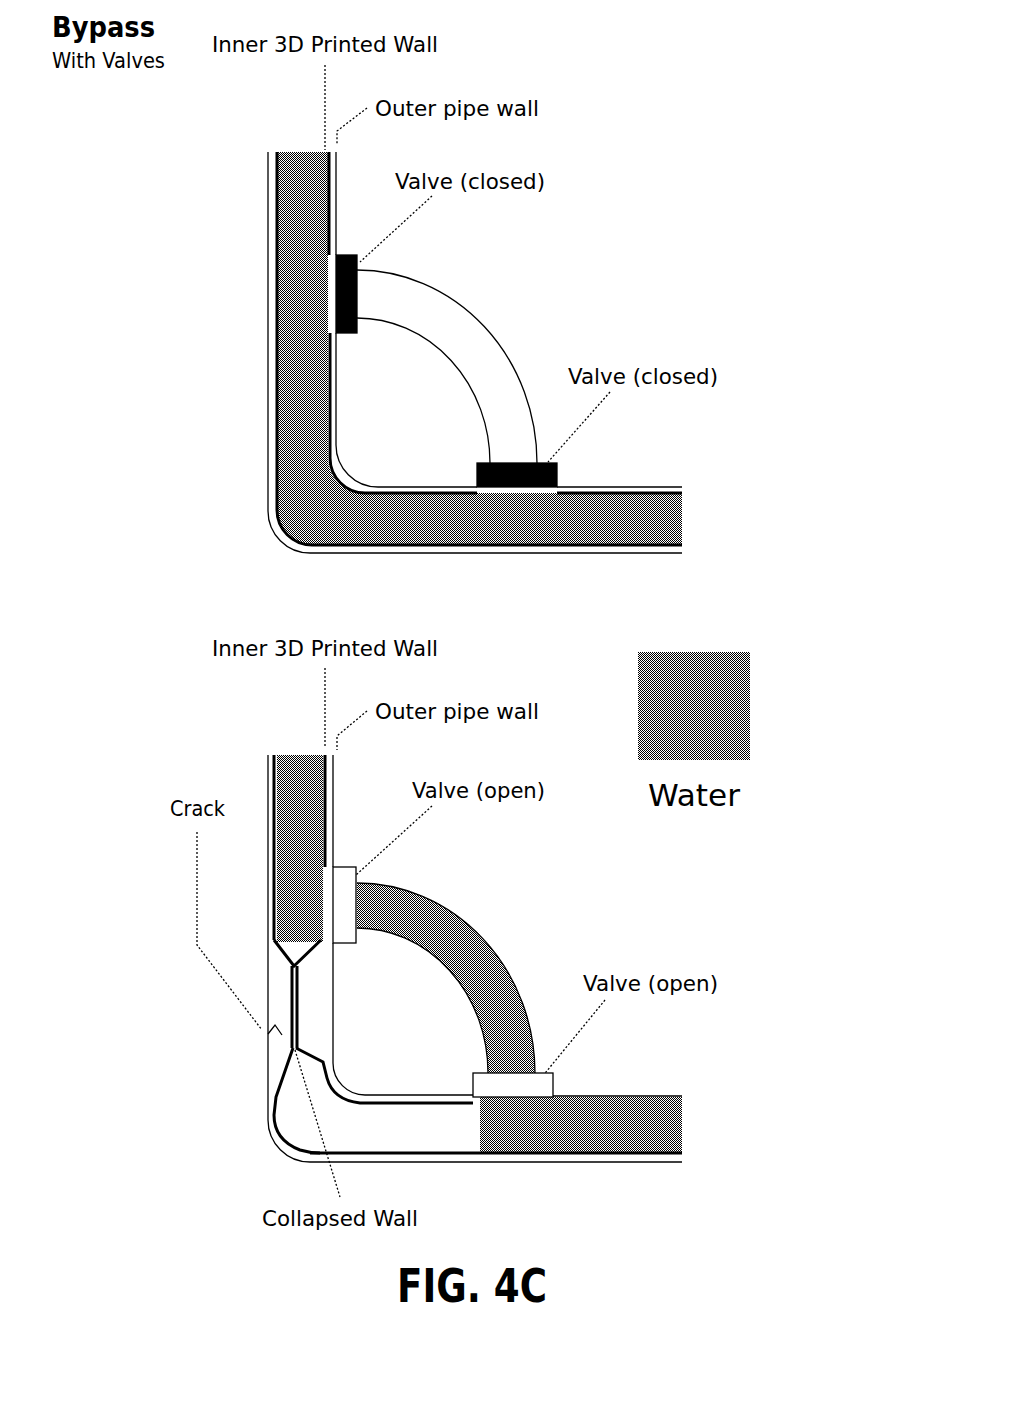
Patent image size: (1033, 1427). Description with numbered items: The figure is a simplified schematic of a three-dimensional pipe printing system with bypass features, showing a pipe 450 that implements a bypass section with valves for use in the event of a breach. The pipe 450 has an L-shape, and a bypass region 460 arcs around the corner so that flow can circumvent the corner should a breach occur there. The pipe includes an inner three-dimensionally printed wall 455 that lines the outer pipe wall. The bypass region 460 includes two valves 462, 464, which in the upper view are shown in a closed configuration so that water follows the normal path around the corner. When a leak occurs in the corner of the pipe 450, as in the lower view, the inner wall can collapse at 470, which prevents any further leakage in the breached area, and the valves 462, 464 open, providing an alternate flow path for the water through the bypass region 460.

The pipe 450 is at (697, 474).
The inner 3D printed wall 455 is at (322, 150).
The bypass region 460 is at (469, 306).
The valve 462 is at (346, 254).
The valve 464 is at (478, 463).
The collapse of the inner wall 470 is at (287, 1068).